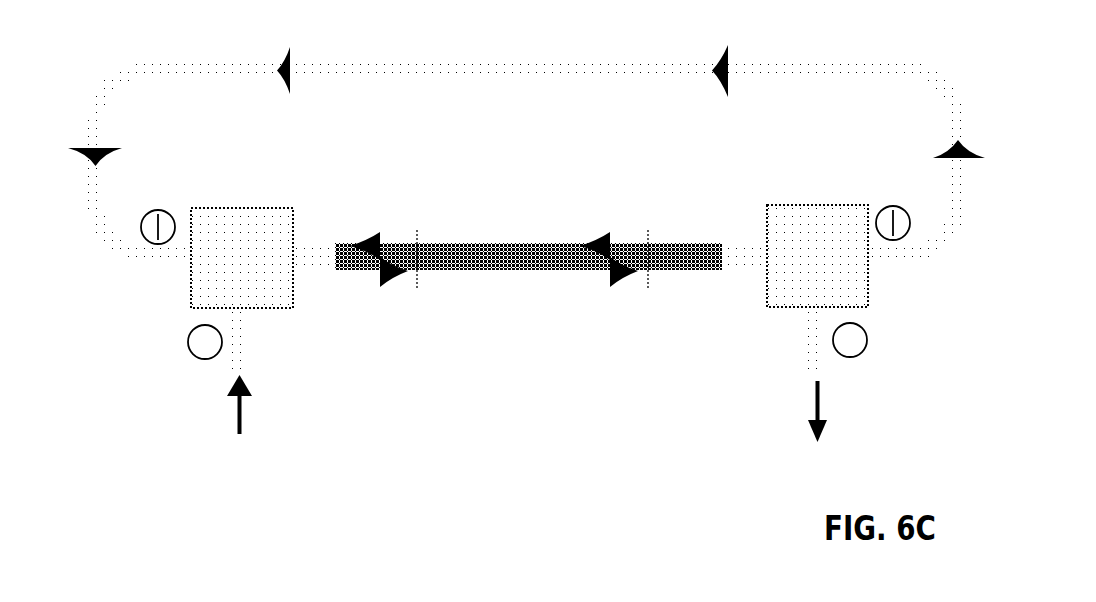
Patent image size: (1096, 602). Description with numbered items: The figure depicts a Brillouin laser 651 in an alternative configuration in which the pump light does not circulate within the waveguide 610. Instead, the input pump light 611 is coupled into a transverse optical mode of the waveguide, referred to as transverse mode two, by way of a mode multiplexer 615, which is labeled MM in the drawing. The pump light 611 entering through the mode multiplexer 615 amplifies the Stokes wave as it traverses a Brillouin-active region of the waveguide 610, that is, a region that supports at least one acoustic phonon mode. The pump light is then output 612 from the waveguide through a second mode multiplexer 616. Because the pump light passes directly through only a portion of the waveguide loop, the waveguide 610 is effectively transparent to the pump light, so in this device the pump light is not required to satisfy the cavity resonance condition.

The Brillouin laser 651 is at (132, 35).
The waveguide 610 is at (520, 303).
The mode multiplexer 615 is at (242, 289).
The mode multiplexer 616 is at (817, 290).
The input pump light 611 is at (226, 423).
The output pump light 612 is at (800, 427).